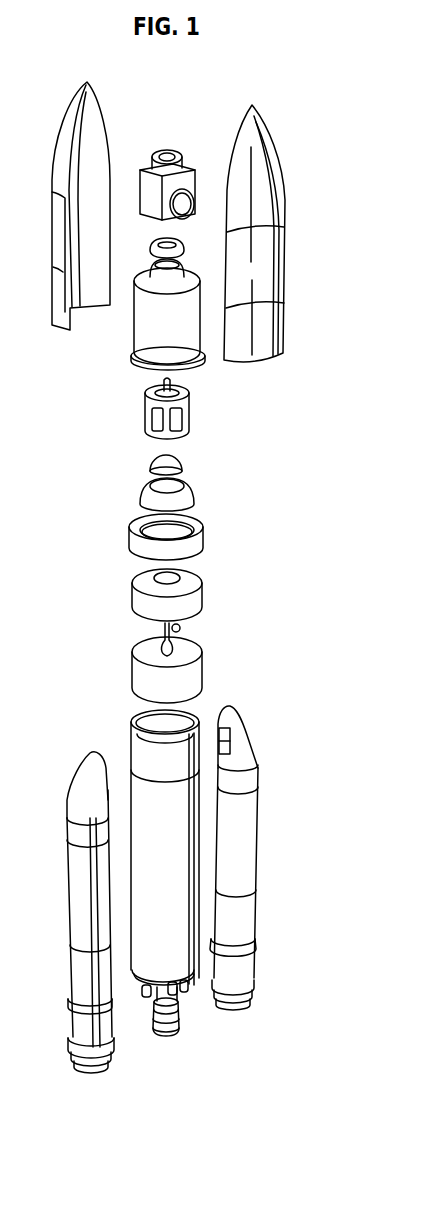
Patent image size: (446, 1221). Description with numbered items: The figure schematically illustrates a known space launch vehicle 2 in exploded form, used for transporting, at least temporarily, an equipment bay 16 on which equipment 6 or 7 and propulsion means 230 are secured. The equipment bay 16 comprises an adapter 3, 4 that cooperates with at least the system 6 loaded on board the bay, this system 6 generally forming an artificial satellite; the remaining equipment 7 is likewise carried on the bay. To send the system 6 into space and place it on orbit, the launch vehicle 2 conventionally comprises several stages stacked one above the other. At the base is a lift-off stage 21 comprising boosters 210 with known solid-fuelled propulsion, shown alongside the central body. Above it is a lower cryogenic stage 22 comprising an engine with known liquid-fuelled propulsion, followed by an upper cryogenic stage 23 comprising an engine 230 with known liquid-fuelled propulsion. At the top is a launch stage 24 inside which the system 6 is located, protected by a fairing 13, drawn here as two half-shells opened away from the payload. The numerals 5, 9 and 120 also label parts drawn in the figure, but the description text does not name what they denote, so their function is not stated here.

The space launch vehicle 2 is at (225, 841).
The adapter 3 is at (184, 461).
The adapter 4 is at (194, 481).
The parachute container 5 is at (160, 315).
The system loaded on board 6 is at (189, 415).
The equipment 7 is at (190, 183).
The electronic module 9 is at (145, 164).
The fairing 13 is at (292, 240).
The equipment bay 16 is at (211, 540).
The lift-off stage 21 is at (267, 858).
The lower cryogenic stage 22 is at (247, 834).
The upper cryogenic stage 23 is at (209, 599).
The launch stage 24 is at (197, 364).
The nozzle 120 is at (180, 1027).
The boosters 210 is at (247, 762).
The engine 230 is at (189, 628).